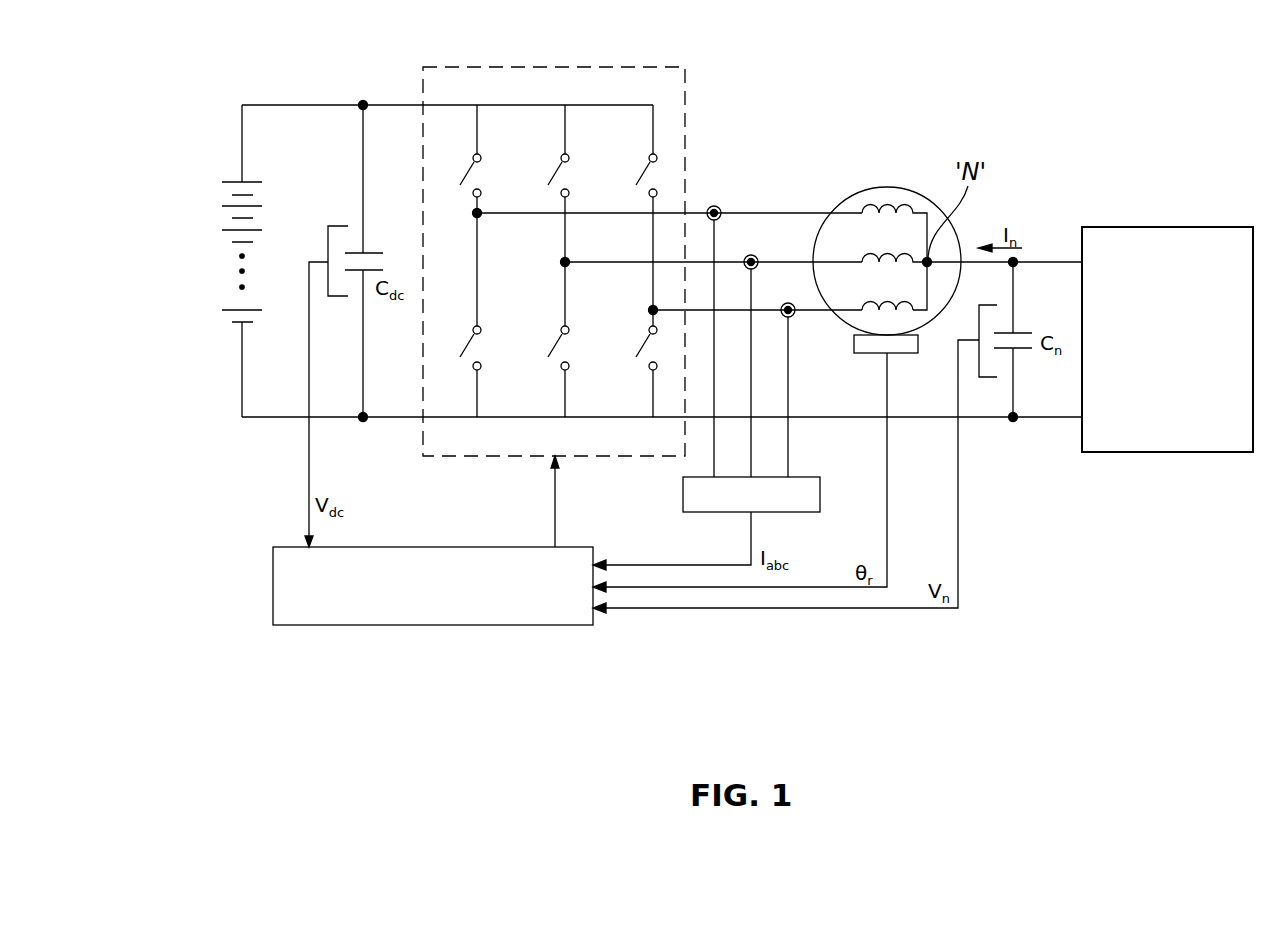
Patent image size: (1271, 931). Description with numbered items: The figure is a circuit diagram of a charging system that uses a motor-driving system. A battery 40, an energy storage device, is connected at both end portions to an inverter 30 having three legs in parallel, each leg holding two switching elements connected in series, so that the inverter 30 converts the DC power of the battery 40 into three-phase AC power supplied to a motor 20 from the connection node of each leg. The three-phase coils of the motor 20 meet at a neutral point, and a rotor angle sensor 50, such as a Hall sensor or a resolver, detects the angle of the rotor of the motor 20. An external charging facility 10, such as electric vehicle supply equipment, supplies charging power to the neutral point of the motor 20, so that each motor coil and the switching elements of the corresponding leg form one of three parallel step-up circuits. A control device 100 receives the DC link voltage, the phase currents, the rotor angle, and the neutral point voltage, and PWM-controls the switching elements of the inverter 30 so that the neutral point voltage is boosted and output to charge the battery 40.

The external charging facility 10 is at (1165, 227).
The motor 20 is at (887, 187).
The inverter 30 is at (685, 143).
The battery 40 is at (228, 270).
The rotor angle sensor 50 is at (908, 353).
The control device 100 is at (450, 626).